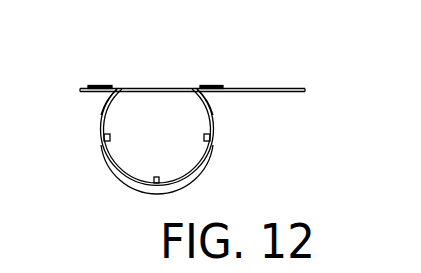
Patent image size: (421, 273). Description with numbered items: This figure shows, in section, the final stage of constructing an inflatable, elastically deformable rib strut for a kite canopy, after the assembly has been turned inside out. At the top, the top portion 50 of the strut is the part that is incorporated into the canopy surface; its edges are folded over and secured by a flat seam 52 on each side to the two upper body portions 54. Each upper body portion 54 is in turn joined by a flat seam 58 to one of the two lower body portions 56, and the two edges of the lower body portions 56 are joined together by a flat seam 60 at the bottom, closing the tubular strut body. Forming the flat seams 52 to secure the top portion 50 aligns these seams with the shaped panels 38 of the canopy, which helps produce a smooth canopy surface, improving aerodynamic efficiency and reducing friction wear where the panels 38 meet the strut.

The shaped panel 38 is at (84, 89).
The top portion 50 is at (157, 87).
The flat seam 52 is at (92, 88).
The upper body portion 54 is at (104, 109).
The lower body portion 56 is at (116, 170).
The flat seam 58 is at (110, 136).
The flat seam 60 is at (158, 182).